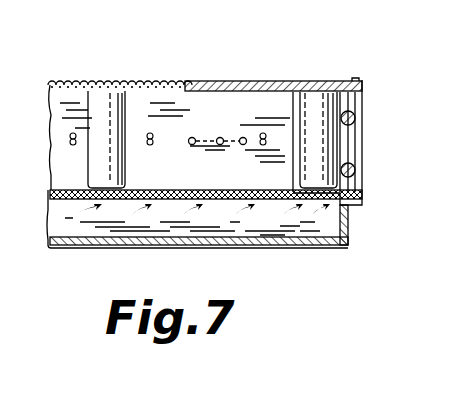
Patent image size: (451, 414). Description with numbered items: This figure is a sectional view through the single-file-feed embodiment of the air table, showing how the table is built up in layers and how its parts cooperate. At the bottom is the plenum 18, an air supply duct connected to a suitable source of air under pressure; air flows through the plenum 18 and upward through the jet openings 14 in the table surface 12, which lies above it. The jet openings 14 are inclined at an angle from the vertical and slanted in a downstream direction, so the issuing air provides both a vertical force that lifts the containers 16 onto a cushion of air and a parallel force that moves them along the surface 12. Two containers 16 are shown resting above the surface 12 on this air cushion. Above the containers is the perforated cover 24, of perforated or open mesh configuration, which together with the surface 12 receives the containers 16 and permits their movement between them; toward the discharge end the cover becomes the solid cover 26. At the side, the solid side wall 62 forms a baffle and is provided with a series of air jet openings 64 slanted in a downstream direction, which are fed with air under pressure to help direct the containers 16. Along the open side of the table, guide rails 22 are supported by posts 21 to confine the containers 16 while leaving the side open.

The surface 12 is at (213, 190).
The jet openings 14 is at (158, 189).
The containers 16 is at (87, 126).
The plenum 18 is at (258, 234).
The posts 21 is at (364, 139).
The guide rails 22 is at (356, 115).
The perforated cover 24 is at (85, 79).
The solid cover 26 is at (268, 82).
The side wall 62 is at (193, 107).
The air jet openings 64 is at (244, 138).